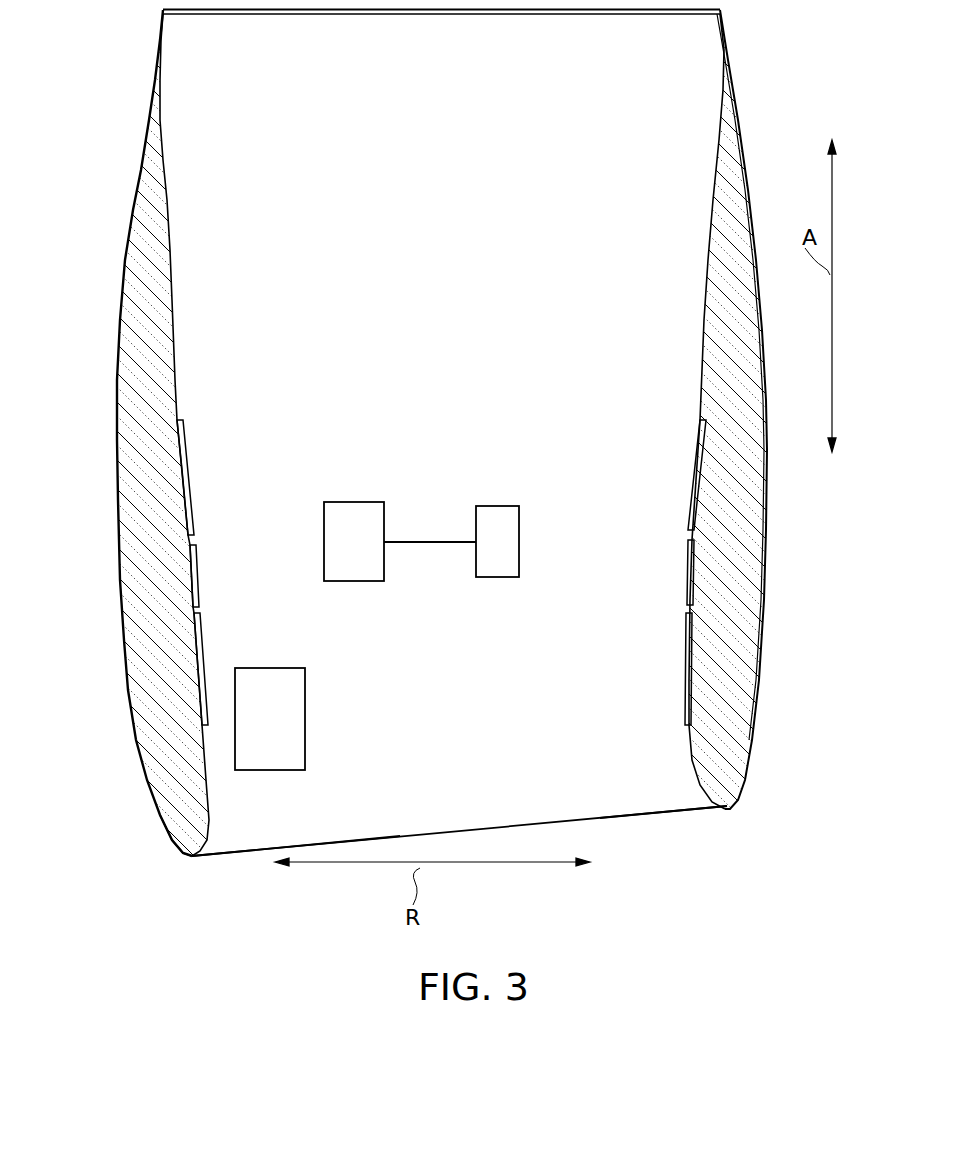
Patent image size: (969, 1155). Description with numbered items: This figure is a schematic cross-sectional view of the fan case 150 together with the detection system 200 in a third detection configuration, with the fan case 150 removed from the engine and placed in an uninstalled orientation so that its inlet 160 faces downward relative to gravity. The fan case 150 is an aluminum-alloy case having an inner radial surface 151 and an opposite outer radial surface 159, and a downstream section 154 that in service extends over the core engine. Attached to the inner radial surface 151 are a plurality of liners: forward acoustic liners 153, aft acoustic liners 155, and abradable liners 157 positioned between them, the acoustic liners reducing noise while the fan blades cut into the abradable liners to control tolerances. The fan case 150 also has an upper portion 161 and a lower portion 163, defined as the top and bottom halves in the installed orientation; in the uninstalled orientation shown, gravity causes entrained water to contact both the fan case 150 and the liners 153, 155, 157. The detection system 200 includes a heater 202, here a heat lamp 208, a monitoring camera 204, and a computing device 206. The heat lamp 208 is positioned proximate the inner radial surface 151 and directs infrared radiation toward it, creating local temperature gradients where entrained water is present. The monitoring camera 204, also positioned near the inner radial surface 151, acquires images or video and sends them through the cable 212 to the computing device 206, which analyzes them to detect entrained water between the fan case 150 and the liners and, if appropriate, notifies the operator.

The fan case 150 is at (766, 533).
The inner radial surface 151 is at (182, 240).
The forward acoustic liners 153 is at (190, 652).
The downstream section 154 is at (140, 133).
The aft acoustic liners 155 is at (185, 463).
The abradable liners 157 is at (187, 563).
The outer radial surface 159 is at (747, 143).
The inlet 160 is at (700, 812).
The upper portion 161 is at (146, 848).
The lower portion 163 is at (643, 837).
The detection system 200 is at (339, 482).
The heater 202 is at (238, 772).
The monitoring camera 204 is at (368, 583).
The computing device 206 is at (497, 505).
The heat lamp 208 is at (285, 772).
The cable 212 is at (425, 545).